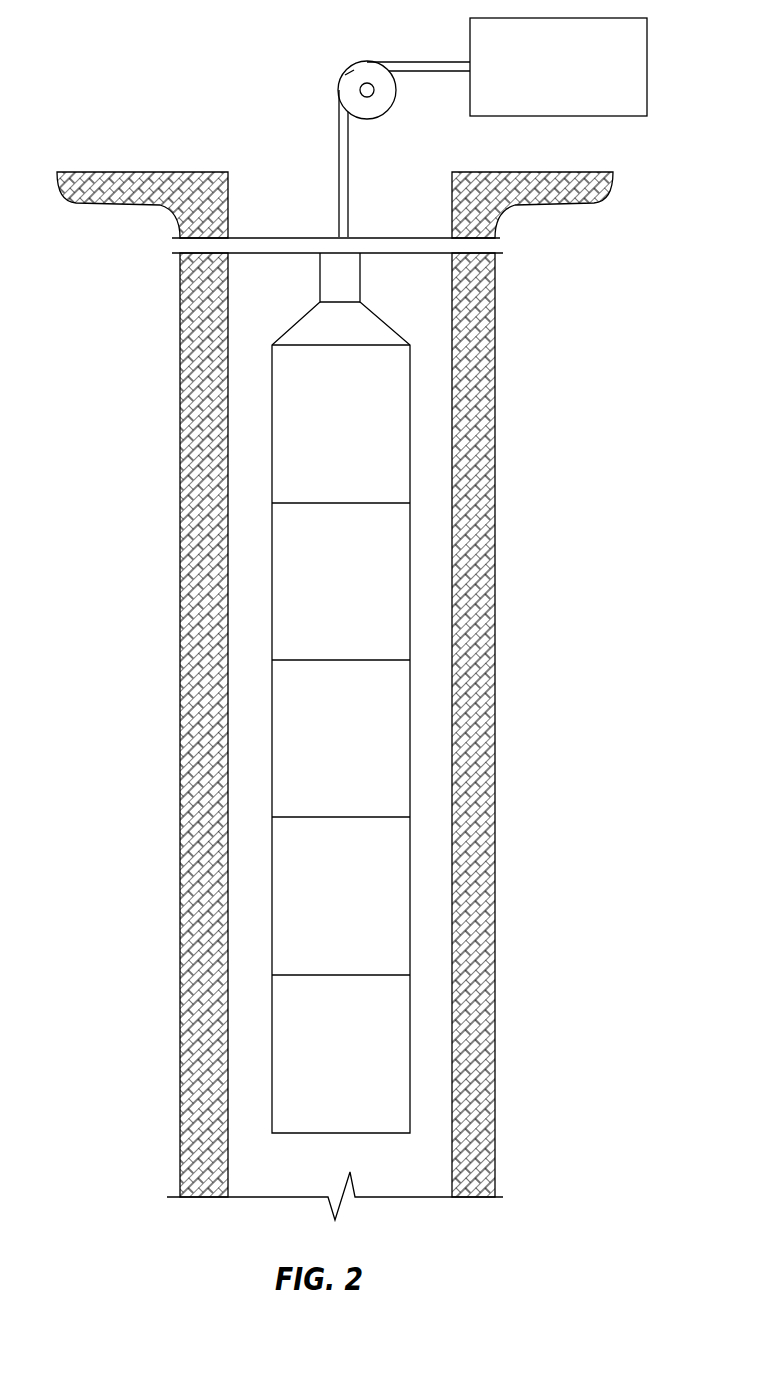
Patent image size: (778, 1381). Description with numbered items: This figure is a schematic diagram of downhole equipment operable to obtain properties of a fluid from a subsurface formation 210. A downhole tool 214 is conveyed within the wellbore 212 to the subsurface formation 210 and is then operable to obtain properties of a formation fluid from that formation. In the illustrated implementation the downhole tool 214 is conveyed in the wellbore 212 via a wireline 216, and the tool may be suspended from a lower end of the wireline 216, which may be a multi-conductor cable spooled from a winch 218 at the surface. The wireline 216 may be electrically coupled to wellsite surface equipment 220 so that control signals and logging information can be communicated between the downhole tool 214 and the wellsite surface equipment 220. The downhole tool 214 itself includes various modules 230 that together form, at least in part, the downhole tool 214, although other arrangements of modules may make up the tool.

The subsurface formation 210 is at (92, 203).
The wellbore 212 is at (240, 477).
The downhole tool 214 is at (240, 608).
The wireline 216 is at (338, 145).
The winch 218 is at (339, 82).
The wellsite surface equipment 220 is at (637, 116).
The modules 230 is at (400, 441).